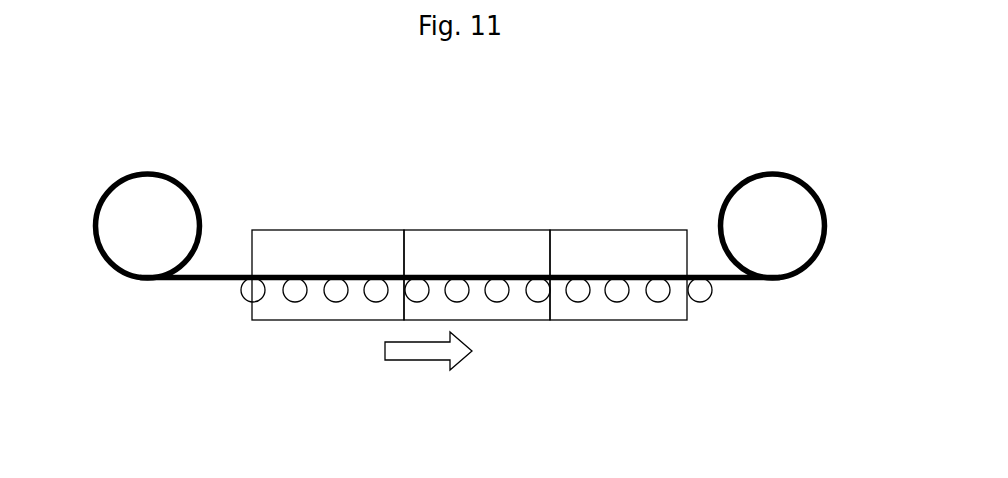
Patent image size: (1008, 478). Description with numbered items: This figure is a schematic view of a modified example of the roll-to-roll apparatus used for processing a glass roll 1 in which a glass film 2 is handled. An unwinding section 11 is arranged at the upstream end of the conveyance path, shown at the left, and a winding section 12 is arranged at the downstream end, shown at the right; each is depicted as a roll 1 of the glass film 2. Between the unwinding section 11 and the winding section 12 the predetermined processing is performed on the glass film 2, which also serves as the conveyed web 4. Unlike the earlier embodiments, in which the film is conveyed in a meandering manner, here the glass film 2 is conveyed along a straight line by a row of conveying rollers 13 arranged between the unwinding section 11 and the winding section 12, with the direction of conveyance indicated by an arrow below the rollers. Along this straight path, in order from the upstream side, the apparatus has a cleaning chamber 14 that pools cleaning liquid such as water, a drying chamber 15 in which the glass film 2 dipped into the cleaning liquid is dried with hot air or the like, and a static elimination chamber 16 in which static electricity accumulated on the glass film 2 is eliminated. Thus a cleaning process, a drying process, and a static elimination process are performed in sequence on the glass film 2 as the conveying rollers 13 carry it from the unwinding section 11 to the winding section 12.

The film roll 1 is at (162, 197).
The glass film 2 is at (211, 274).
The support 4 is at (460, 210).
The unwinding section 11 is at (135, 165).
The winding section 12 is at (788, 168).
The conveying rollers 13 is at (496, 291).
The cleaning chamber 14 is at (317, 243).
The drying chamber 15 is at (448, 246).
The static elimination chamber 16 is at (578, 244).